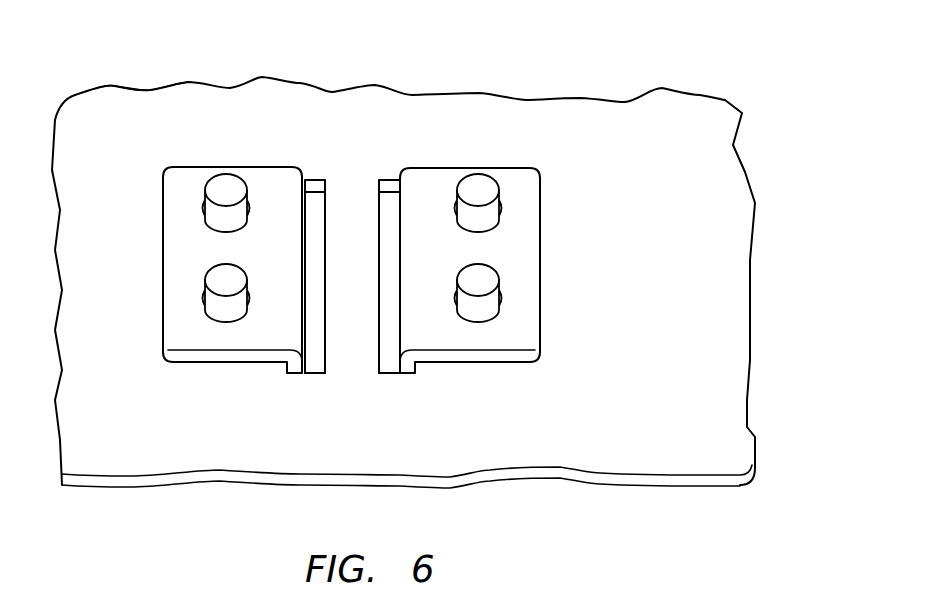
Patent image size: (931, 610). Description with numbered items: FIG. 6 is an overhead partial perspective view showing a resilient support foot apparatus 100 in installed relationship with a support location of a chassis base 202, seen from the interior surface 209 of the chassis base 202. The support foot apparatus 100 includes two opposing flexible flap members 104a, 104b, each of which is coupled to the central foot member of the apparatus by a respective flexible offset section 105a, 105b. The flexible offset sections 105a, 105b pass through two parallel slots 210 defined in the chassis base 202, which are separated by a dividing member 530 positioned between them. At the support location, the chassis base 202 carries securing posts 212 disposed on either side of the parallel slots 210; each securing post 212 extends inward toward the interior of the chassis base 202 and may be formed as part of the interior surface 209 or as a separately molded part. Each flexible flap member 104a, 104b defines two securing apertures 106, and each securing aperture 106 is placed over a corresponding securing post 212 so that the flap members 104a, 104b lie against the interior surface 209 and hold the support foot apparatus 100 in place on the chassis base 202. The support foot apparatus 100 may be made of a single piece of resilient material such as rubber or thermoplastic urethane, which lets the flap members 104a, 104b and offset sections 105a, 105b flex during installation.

The resilient support foot apparatus 100 is at (281, 167).
The flexible flap member 104a is at (183, 168).
The flexible flap member 104b is at (428, 168).
The flexible offset section 105a is at (312, 186).
The flexible offset section 105b is at (385, 186).
The securing aperture 106 is at (437, 190).
The chassis base 202 is at (745, 170).
The interior surface 209 is at (110, 103).
The parallel slot 210 is at (321, 374).
The securing post 212 is at (473, 183).
The dividing member 530 is at (355, 215).